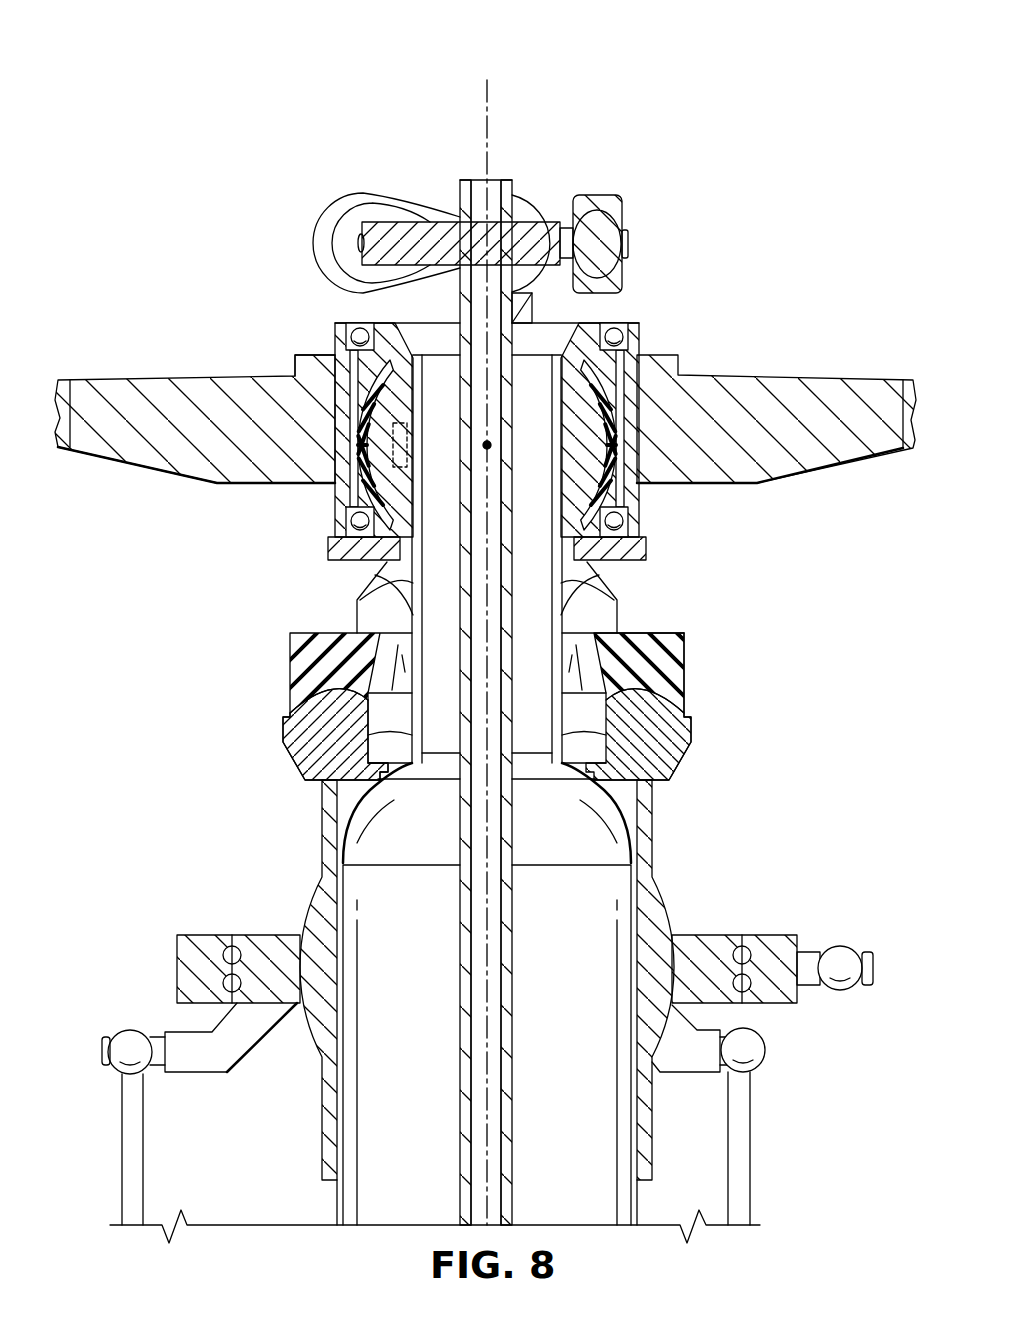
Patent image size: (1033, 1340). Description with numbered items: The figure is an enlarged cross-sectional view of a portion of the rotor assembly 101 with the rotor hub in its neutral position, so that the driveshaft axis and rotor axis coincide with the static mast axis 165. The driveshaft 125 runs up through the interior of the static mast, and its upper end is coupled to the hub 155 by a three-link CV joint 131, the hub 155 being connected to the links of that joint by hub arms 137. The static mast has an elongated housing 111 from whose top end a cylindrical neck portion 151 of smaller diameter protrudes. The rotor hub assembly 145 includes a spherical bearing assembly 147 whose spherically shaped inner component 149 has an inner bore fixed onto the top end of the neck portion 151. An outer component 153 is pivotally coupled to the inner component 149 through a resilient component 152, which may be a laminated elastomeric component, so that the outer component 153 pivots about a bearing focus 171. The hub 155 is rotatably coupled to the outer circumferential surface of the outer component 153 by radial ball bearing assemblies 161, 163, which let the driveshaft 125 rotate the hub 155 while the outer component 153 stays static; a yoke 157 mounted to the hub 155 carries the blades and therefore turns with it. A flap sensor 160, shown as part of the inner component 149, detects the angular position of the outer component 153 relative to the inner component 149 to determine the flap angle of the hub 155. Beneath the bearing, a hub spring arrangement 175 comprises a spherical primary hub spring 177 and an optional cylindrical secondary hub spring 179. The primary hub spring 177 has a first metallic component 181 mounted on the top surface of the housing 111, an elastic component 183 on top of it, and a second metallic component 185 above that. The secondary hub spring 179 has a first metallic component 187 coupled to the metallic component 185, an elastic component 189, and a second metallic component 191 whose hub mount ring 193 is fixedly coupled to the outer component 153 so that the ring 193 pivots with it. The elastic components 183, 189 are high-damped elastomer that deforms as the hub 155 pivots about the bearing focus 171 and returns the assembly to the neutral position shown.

The rotor assembly 101 is at (289, 73).
The elongated housing 111 is at (322, 822).
The driveshaft 125 is at (514, 193).
The CV joint 131 is at (358, 180).
The hub arms 137 is at (532, 305).
The rotor hub assembly 145 is at (304, 302).
The spherical bearing assembly 147 is at (614, 430).
The inner component 149 is at (355, 478).
The neck portion 151 is at (290, 692).
The resilient component 152 is at (372, 400).
The outer component 153 is at (346, 330).
The hub 155 is at (300, 362).
The yoke 157 is at (794, 347).
The flap sensor 160 is at (392, 445).
The radial ball bearing assembly 161 is at (624, 522).
The radial ball bearing assembly 163 is at (626, 338).
The static mast axis 165 is at (490, 92).
The bearing focus 171 is at (487, 445).
The locking assembly 175 is at (808, 670).
The primary hub spring 177 is at (682, 777).
The secondary hub spring 179 is at (619, 620).
The first metallic component 181 is at (690, 752).
The elastic component 183 is at (684, 705).
The second metallic component 185 is at (684, 660).
The first metallic component 187 is at (358, 605).
The elastic component 189 is at (378, 573).
The second metallic component 191 is at (590, 590).
The hub mount ring 193 is at (330, 550).